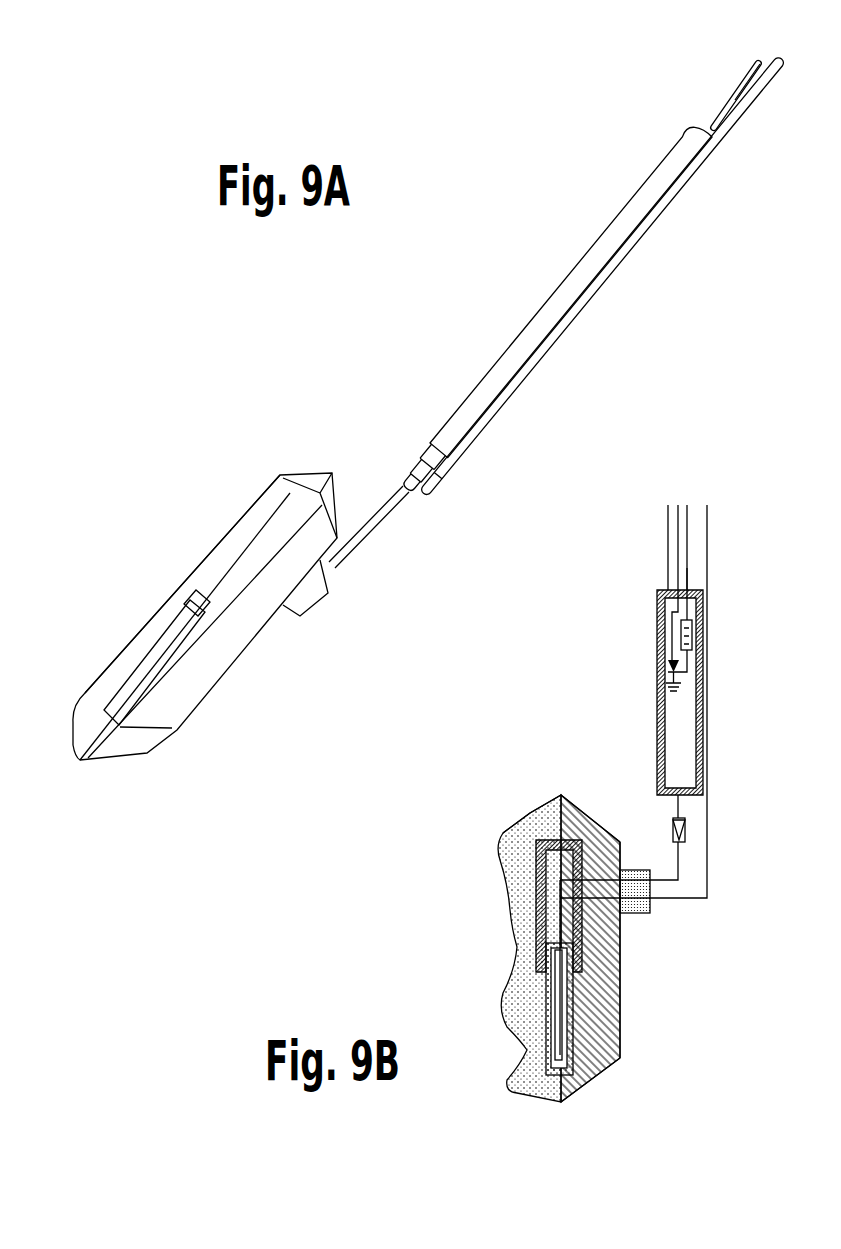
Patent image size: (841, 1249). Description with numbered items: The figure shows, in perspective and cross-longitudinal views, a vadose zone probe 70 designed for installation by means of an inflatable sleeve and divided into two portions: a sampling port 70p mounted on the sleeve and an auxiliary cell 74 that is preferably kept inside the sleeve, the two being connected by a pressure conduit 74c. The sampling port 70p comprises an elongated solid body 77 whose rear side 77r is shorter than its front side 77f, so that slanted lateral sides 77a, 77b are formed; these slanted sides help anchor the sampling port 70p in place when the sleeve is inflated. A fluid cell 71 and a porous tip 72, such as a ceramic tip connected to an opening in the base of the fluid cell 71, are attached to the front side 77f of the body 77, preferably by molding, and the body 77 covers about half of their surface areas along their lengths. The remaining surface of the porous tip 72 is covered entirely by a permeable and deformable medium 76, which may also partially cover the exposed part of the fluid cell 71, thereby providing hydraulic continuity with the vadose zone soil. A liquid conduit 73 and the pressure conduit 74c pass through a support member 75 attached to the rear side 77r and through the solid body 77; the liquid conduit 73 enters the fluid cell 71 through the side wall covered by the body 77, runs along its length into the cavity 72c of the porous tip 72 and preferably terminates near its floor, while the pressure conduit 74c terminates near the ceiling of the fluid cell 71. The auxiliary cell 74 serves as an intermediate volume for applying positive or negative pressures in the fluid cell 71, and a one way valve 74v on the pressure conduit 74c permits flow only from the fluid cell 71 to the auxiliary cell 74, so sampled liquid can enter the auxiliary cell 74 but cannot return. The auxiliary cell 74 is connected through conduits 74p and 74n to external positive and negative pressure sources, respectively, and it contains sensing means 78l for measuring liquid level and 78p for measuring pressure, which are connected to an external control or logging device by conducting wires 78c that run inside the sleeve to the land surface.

In FIG. 9A, the vadose zone probe 70 is at (400, 326).
In FIG. 9B, the vadose zone probe 70 is at (579, 720).
In FIG. 9A, the sampling port 70p is at (163, 543).
In FIG. 9B, the sampling port 70p is at (456, 837).
In FIG. 9A, the fluid cell 71 is at (233, 560).
In FIG. 9B, the fluid cell 71 is at (537, 893).
In FIG. 9A, the porous tip 72 is at (163, 657).
In FIG. 9B, the porous tip 72 is at (547, 1030).
In FIG. 9B, the cavity of porous tip 72c is at (557, 1057).
In FIG. 9A, the liquid conduit 73 is at (633, 235).
In FIG. 9B, the liquid conduit 73 is at (707, 783).
In FIG. 9A, the auxiliary cell 74 is at (613, 222).
In FIG. 9B, the auxiliary cell 74 is at (693, 642).
In FIG. 9A, the positive pressure conduit 74p is at (760, 64).
In FIG. 9B, the positive pressure conduit 74p is at (684, 535).
In FIG. 9A, the negative pressure conduit 74n is at (720, 83).
In FIG. 9B, the negative pressure conduit 74n is at (668, 558).
In FIG. 9B, the one way valve 74v is at (673, 833).
In FIG. 9B, the pressure conduit 74c is at (708, 840).
In FIG. 9A, the support member 75 is at (306, 592).
In FIG. 9B, the support member 75 is at (637, 913).
In FIG. 9A, the permeable and deformable medium 76 is at (272, 492).
In FIG. 9B, the permeable and deformable medium 76 is at (517, 947).
In FIG. 9A, the solid body 77 is at (197, 683).
In FIG. 9B, the solid body 77 is at (617, 952).
In FIG. 9B, the slanted lateral side 77a is at (602, 812).
In FIG. 9B, the front side 77f is at (545, 818).
In FIG. 9B, the rear side 77r is at (620, 1006).
In FIG. 9B, the slanted lateral side 77b is at (590, 1088).
In FIG. 9B, the conducting wires 78c is at (688, 578).
In FIG. 9B, the liquid level sensing means 78l is at (668, 668).
In FIG. 9B, the pressure sensing means 78p is at (687, 668).